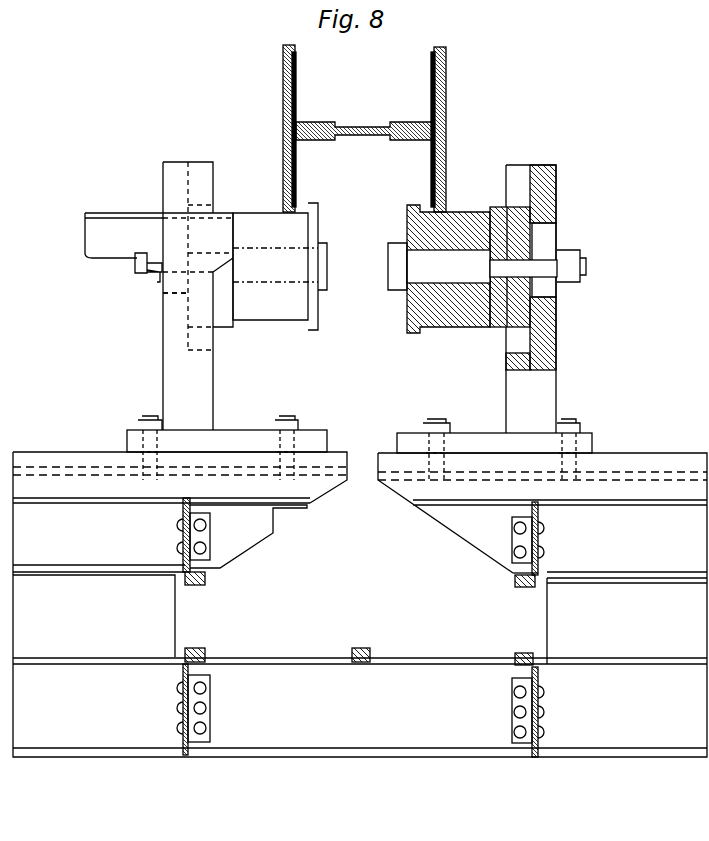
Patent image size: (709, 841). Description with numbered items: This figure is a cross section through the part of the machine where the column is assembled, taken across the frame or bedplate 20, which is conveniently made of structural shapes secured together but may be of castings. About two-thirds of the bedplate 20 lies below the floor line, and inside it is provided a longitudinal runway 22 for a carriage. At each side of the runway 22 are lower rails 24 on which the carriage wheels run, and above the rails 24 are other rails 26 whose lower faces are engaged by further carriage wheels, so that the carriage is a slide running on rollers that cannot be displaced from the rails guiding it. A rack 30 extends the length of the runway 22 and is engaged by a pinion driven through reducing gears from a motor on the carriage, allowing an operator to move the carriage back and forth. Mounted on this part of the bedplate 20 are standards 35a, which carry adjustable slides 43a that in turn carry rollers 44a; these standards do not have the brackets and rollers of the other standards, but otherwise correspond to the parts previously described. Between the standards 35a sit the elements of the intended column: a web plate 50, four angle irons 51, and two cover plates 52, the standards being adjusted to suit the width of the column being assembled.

The frame or bedplate 20 is at (445, 750).
The longitudinal runway 22 is at (355, 580).
The rails 24 is at (195, 648).
The rails 26 is at (197, 585).
The rack 30 is at (362, 662).
The standards 35a is at (213, 400).
The adjustable slides 43a is at (226, 327).
The rollers 44a is at (276, 320).
The web plate 50 is at (354, 126).
The angle irons 51 is at (298, 90).
The cover plates 52 is at (283, 82).